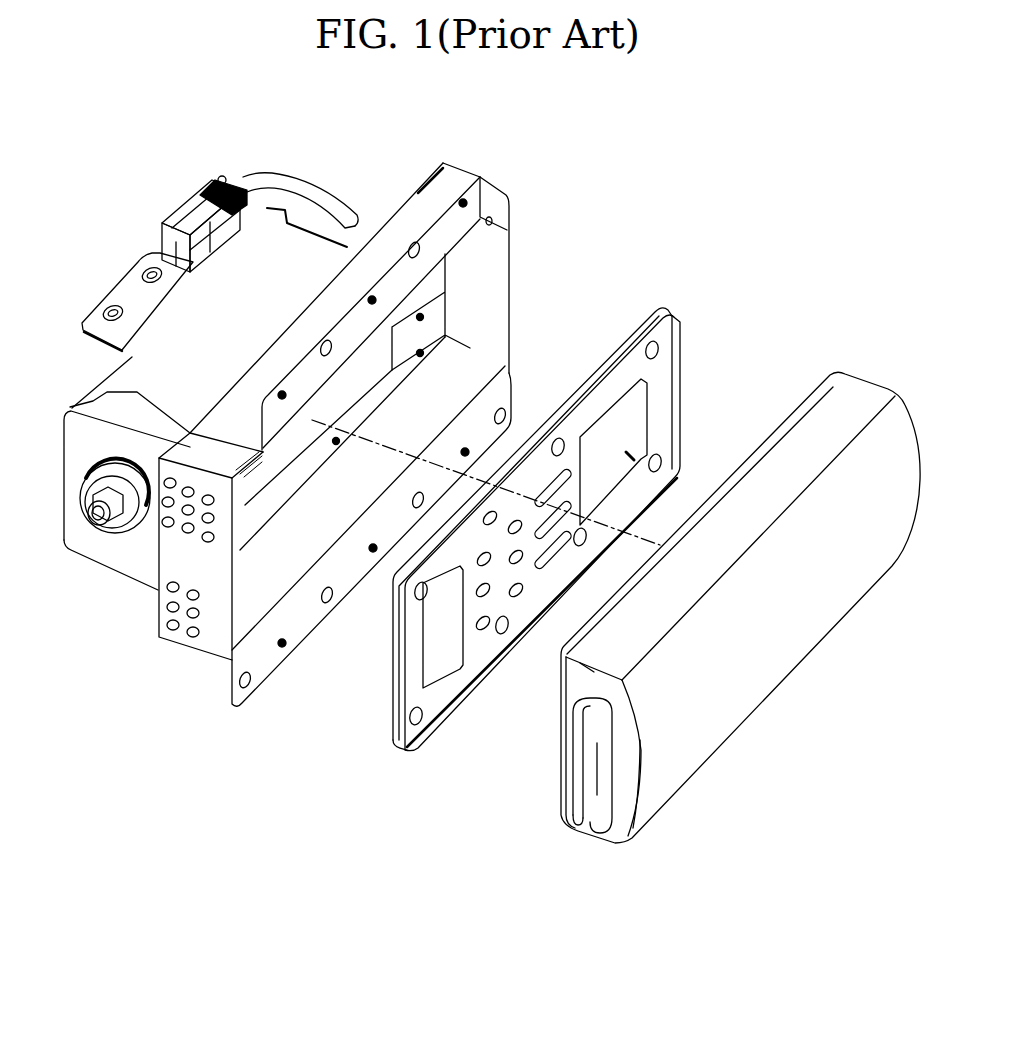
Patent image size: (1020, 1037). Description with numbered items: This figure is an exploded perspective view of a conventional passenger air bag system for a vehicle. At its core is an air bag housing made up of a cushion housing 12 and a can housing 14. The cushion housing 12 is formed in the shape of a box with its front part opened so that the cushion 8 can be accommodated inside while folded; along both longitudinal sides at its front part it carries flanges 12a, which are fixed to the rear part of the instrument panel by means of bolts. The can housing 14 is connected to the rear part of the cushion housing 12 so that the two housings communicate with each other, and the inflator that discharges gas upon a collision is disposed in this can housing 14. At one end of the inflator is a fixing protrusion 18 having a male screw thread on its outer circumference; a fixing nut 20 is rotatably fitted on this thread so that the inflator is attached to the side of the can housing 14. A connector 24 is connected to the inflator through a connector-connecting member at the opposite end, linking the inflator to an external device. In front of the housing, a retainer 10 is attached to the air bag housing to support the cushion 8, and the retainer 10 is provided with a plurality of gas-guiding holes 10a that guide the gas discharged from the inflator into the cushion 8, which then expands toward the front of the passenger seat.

The cushion 8 is at (594, 822).
The retainer 10 is at (395, 744).
The gas-guiding holes 10a is at (488, 636).
The cushion housing 12 is at (213, 640).
The flanges 12a is at (236, 706).
The can housing 14 is at (138, 557).
The fixing protrusion 18 is at (100, 521).
The fixing nut 20 is at (88, 494).
The connector 24 is at (160, 233).